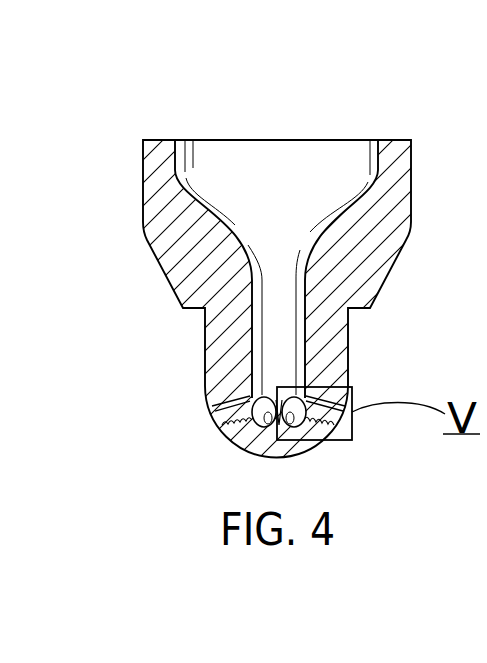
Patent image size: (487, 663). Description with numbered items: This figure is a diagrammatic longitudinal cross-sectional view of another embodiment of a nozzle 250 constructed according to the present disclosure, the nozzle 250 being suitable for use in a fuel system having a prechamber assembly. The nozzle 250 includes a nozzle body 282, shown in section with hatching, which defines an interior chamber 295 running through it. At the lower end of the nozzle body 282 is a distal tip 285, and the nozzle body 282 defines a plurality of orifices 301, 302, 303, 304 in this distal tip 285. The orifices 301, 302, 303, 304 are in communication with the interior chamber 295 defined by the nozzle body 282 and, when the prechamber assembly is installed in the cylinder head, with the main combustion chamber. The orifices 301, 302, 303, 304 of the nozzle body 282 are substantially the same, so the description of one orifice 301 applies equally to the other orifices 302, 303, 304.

The nozzle 250 is at (119, 137).
The nozzle body 282 is at (174, 239).
The interior chamber 295 is at (268, 366).
The orifice 304 is at (230, 423).
The distal tip 285 is at (242, 436).
The orifice 303 is at (261, 429).
The orifice 302 is at (281, 430).
The orifice 301 is at (334, 418).